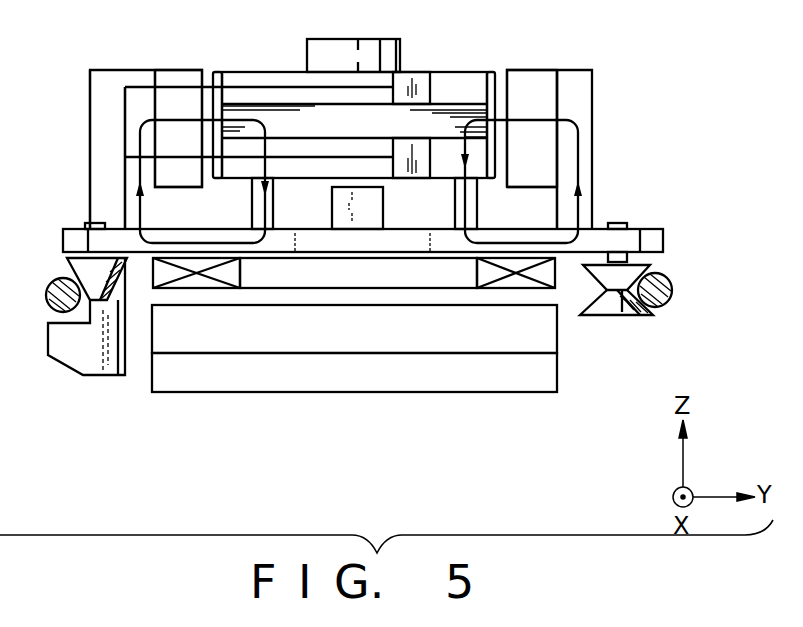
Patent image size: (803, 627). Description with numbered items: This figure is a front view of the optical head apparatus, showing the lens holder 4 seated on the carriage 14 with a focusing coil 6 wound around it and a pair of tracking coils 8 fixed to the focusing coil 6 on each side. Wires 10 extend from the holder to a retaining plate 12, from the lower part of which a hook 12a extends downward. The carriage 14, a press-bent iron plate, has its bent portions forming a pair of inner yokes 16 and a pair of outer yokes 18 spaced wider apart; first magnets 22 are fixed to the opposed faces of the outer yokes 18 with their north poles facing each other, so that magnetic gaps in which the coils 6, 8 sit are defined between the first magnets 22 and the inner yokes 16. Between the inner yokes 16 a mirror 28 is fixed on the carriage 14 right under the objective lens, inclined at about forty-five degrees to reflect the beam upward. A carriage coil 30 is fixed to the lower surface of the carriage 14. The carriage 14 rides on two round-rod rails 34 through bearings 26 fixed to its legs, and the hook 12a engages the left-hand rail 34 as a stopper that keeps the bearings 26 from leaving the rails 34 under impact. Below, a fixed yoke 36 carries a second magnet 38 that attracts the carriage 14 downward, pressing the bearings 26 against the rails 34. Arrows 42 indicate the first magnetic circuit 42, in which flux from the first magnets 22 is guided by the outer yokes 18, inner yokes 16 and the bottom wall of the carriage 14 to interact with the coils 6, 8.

The lens holder 4 is at (348, 47).
The focusing coil 6 is at (273, 120).
The tracking coils 8 is at (217, 75).
The wire 10 is at (177, 80).
The retaining plate 12 is at (108, 80).
The hook 12a is at (86, 365).
The carriage 14 is at (75, 226).
The inner yokes 16 is at (273, 203).
The outer yokes 18 is at (139, 97).
The first magnets 22 is at (185, 112).
The bearing 26 is at (92, 288).
The mirror 28 is at (355, 195).
The carriage coil 30 is at (158, 272).
The rails 34 is at (62, 278).
The fixed yoke 36 is at (528, 382).
The second magnet 38 is at (410, 342).
The first magnetic circuit 42 is at (140, 152).